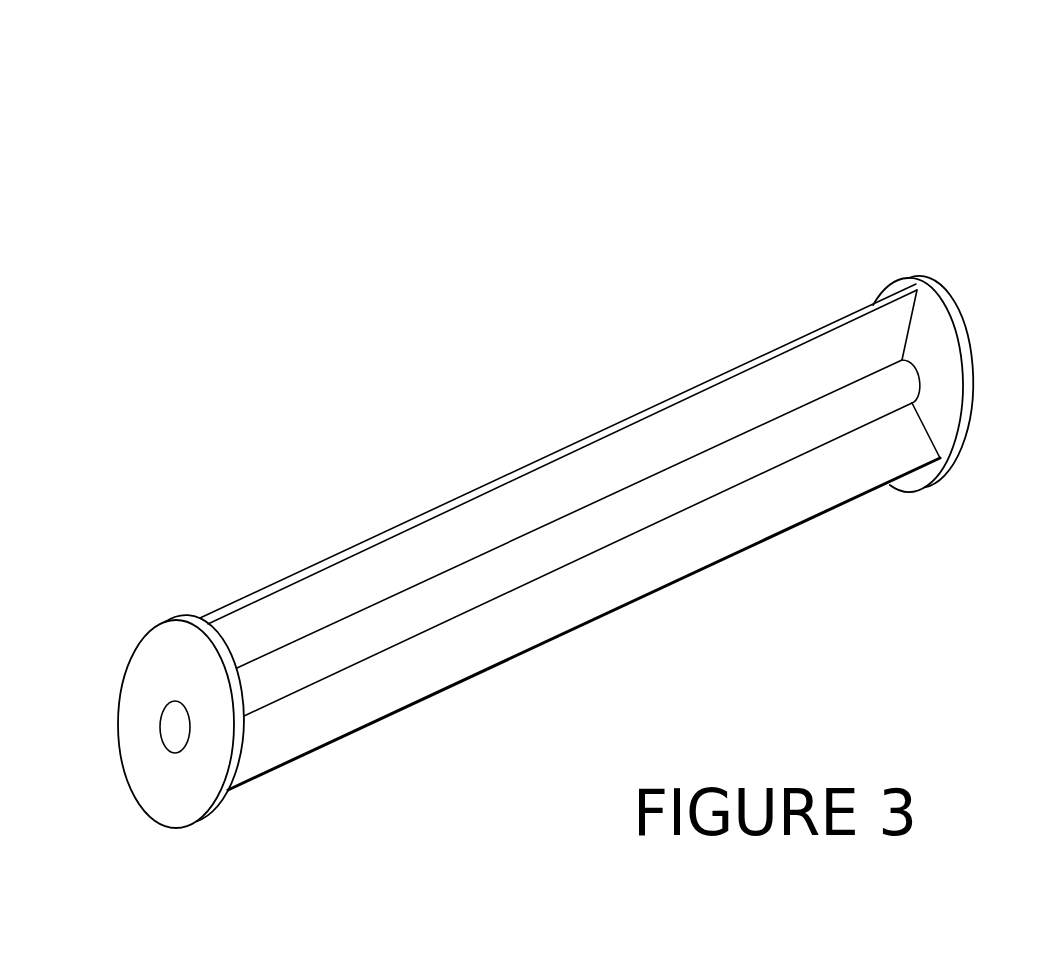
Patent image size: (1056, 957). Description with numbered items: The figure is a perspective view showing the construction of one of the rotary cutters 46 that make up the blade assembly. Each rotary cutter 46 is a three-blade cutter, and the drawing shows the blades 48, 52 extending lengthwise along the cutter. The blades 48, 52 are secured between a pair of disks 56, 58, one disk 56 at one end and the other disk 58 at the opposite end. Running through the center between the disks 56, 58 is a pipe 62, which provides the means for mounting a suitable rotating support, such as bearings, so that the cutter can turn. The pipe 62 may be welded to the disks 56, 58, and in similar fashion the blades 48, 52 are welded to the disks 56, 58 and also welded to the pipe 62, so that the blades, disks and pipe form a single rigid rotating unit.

The rotary cutter 46 is at (777, 160).
The blade 48 is at (532, 458).
The blade 52 is at (643, 568).
The disk 56 is at (165, 788).
The disk 58 is at (937, 337).
The pipe 62 is at (447, 590).